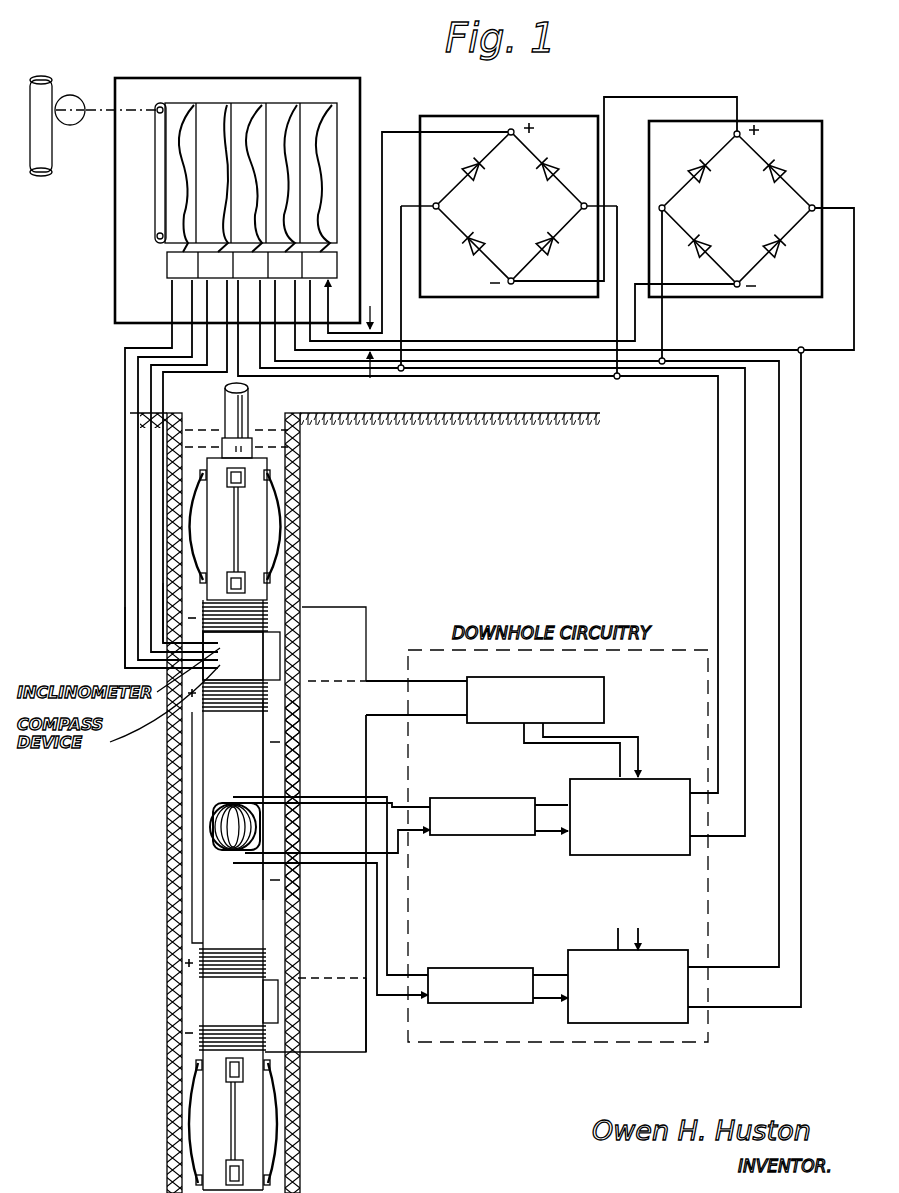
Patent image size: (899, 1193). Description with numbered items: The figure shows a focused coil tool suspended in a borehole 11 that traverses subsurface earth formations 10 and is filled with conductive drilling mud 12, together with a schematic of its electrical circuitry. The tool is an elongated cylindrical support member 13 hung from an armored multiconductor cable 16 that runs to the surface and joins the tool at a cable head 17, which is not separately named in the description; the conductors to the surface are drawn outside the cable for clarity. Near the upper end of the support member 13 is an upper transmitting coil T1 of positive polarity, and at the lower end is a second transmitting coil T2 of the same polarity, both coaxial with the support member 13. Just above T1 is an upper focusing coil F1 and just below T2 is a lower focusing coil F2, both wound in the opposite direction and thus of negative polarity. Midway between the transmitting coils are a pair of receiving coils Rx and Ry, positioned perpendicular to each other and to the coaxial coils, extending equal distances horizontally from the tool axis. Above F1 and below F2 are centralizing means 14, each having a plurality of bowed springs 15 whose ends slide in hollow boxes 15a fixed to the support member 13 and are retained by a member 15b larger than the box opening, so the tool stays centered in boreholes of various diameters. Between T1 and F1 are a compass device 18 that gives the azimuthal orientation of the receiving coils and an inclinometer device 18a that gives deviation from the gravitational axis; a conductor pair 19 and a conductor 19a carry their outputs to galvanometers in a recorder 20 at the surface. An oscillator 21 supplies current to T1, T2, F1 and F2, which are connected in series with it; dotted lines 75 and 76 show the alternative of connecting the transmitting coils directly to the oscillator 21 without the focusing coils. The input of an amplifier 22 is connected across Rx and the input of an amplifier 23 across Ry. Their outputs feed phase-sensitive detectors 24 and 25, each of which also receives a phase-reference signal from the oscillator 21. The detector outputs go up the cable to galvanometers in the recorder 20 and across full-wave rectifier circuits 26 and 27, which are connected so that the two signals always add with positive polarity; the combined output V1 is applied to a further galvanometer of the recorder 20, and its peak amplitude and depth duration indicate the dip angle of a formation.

The subsurface earth formations 10 is at (337, 739).
The borehole 11 is at (268, 470).
The drilling mud 12 is at (275, 760).
The elongated cylindrical support member 13 is at (242, 772).
The centralizing means 14 is at (277, 576).
The bowed springs 15 is at (238, 524).
The hollow boxes 15a is at (237, 484).
The member 15b is at (247, 577).
The armored multiconductor cable 16 is at (240, 399).
The cable head 17 is at (253, 443).
The compass device 18 is at (255, 667).
The inclinometer device 18a is at (257, 648).
The conductor pair 19 is at (125, 607).
The conductor 19a is at (163, 583).
The recorder 20 is at (134, 78).
The oscillator 21 is at (604, 683).
The amplifier 22 is at (482, 797).
The amplifier 23 is at (483, 967).
The phase-sensitive detector 24 is at (663, 778).
The phase-sensitive detector 25 is at (587, 950).
The full-wave rectifier circuit 26 is at (557, 116).
The full-wave rectifier circuit 27 is at (792, 120).
The dotted lines 75 is at (333, 677).
The dotted lines 76 is at (360, 1000).
The upper focusing coil F1 is at (303, 613).
The lower focusing coil F2 is at (272, 1038).
The upper transmitting coil T1 is at (270, 695).
The second transmitting coil T2 is at (273, 958).
The receiving coil Rx is at (200, 792).
The receiving coil Ry is at (210, 832).
The output signal V1 is at (369, 334).